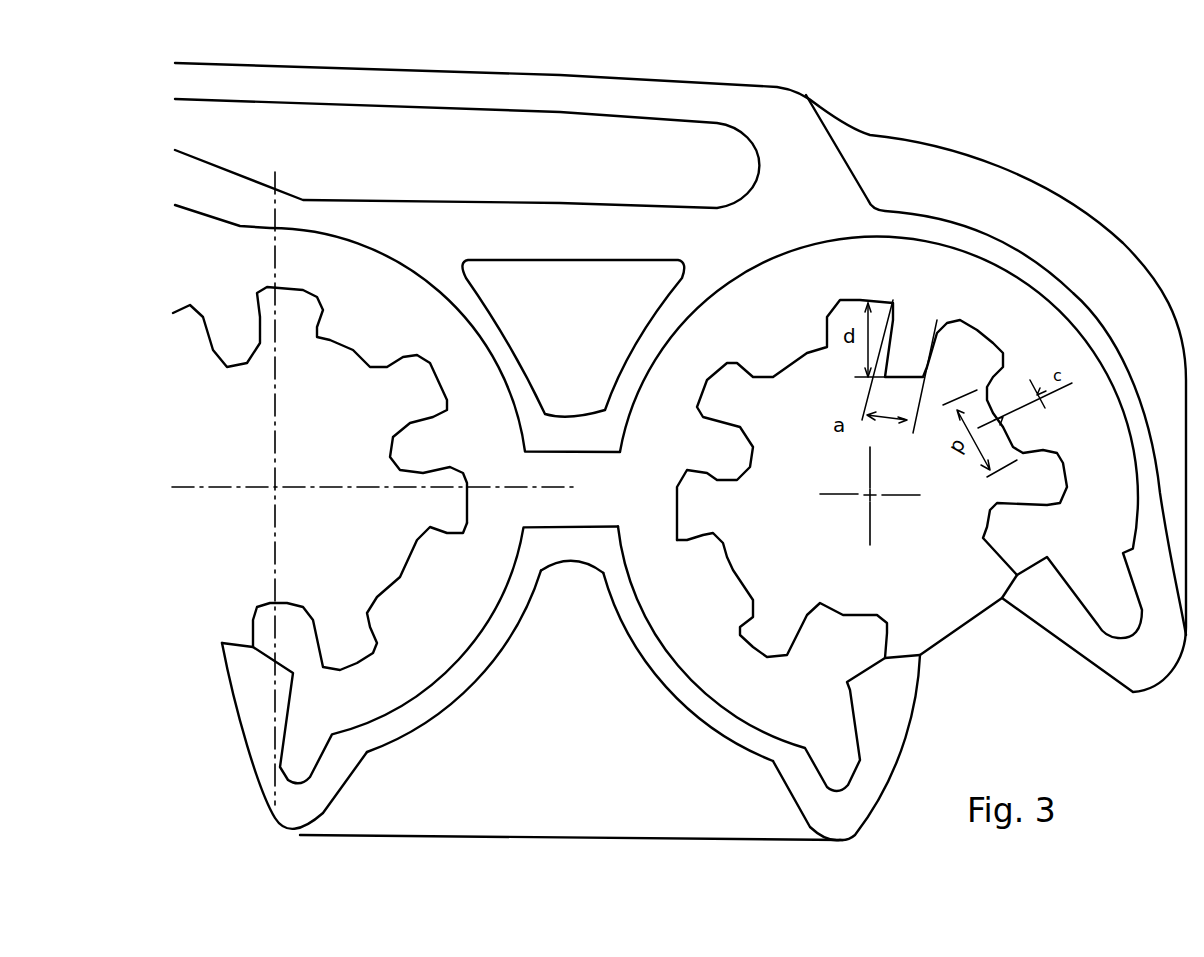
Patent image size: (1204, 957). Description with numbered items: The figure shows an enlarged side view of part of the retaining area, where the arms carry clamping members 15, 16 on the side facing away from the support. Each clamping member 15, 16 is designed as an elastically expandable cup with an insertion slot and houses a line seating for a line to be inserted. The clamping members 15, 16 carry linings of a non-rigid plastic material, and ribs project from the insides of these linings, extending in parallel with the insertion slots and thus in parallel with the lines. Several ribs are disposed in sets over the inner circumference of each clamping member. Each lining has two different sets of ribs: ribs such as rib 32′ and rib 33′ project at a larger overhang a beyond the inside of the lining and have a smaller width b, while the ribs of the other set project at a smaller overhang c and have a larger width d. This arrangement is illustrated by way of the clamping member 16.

The clamping member 15 is at (368, 744).
The clamping member 16 is at (728, 719).
The rib 32′ is at (735, 462).
The rib 33′ is at (234, 343).